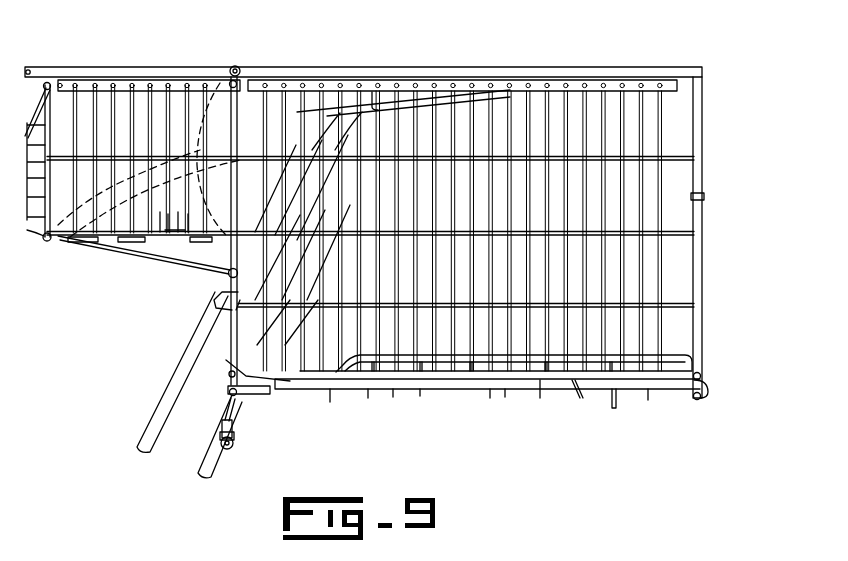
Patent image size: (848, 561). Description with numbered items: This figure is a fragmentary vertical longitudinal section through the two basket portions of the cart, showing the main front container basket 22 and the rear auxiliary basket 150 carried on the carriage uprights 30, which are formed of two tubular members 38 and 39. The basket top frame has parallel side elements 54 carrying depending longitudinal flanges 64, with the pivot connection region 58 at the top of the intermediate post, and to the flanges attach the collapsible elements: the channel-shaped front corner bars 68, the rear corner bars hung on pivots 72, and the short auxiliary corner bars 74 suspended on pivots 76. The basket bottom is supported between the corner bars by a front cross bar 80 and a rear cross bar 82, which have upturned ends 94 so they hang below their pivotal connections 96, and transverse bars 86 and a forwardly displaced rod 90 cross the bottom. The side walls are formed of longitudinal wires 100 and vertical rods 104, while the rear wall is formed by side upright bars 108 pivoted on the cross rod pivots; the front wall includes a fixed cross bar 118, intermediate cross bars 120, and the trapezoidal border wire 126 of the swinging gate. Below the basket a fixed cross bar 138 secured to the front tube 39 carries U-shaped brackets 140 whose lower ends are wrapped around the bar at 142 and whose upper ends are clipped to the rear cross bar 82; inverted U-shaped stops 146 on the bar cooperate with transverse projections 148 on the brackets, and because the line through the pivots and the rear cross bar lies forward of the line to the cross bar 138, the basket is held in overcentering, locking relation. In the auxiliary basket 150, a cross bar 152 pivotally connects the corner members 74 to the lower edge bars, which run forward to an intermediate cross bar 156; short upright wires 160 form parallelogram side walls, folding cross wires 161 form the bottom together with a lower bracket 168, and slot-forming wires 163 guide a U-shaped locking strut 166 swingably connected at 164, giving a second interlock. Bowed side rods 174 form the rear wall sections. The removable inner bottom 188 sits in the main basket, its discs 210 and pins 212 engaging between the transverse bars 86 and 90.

The container or basket member 22 is at (397, 223).
The upright 30 is at (166, 385).
The tubular member 38 is at (144, 451).
The tubular member 39 is at (206, 466).
The side element 54 is at (512, 67).
The pivot knob 58 is at (236, 66).
The depending longitudinal flange 64 is at (580, 86).
The front corner bar 68 is at (698, 340).
The pivot 72 is at (240, 112).
The auxiliary corner bar 74 is at (58, 88).
The pivot 76 is at (52, 110).
The front cross bar 80 is at (701, 397).
The rear cross bar 82 is at (229, 392).
The transverse bar 86 is at (372, 398).
The transverse rod 90 is at (582, 398).
The upturned end 94 is at (709, 384).
The pivotal connection 96 is at (700, 375).
The longitudinally extending wire 100 is at (678, 158).
The vertical rod 104 is at (662, 118).
The side upright bar 108 is at (267, 112).
The fixed cross bar 118 is at (705, 196).
The intermediate cross bar 120 is at (700, 306).
The trapezoidal border wire 126 is at (703, 72).
The fixed cross bar 138 is at (234, 448).
The U-shaped bracket 140 is at (222, 434).
The wrapped lower end 142 is at (234, 443).
The inverted U-shaped rod 146 is at (233, 426).
The transverse projection 148 is at (226, 420).
The auxiliary container or basket 150 is at (132, 156).
The cross bar 152 is at (50, 241).
The intermediate cross bar 156 is at (228, 277).
The short upright wire 160 is at (133, 108).
The cross wire 161 is at (160, 214).
The slot forming wire 163 is at (124, 243).
The swingable connection 164 is at (216, 300).
The locking strut 166 is at (205, 264).
The seat bottom bracket 168 is at (90, 242).
The rearwardly bowed upright side rod 174 is at (26, 125).
The removable inner bottom 188 is at (487, 416).
The semicircular disc like projection 210 is at (618, 403).
The short downwardly projecting rod 212 is at (532, 398).